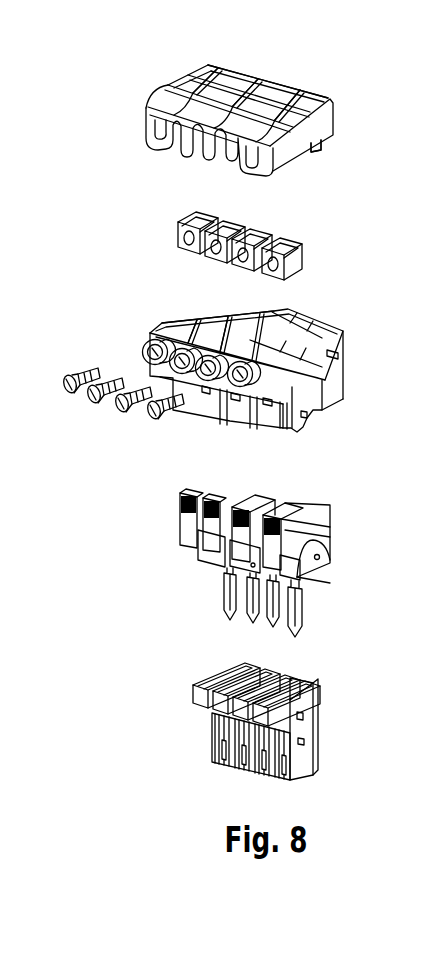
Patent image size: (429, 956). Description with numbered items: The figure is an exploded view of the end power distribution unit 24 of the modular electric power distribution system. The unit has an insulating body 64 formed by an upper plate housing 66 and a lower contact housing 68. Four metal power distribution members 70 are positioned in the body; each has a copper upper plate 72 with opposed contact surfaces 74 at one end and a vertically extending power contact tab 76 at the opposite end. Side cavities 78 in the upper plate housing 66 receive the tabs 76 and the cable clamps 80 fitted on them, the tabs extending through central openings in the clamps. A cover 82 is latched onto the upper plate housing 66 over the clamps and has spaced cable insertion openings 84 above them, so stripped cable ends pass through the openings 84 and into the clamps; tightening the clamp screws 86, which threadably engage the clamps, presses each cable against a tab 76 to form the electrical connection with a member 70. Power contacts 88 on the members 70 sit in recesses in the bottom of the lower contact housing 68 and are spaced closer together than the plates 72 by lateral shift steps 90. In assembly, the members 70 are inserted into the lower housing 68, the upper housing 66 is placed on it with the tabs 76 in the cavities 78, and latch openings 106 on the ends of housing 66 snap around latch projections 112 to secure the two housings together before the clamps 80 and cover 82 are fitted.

The end power distribution unit 24 is at (352, 96).
The insulating body 64 is at (163, 85).
The upper plate housing 66 is at (345, 333).
The lower contact housing 68 is at (316, 709).
The power distribution member 70 is at (293, 494).
The upper plate 72 is at (250, 500).
The contact surfaces 74 is at (304, 516).
The power contact tab 76 is at (210, 498).
The side cavities 78 is at (217, 337).
The cable clamps 80 is at (268, 224).
The cover 82 is at (331, 110).
The cable insertion openings 84 is at (220, 64).
The clamp screws 86 is at (100, 396).
The power contacts 88 is at (255, 622).
The lateral shift steps 90 is at (320, 542).
The latch openings 106 is at (308, 418).
The latch projections 112 is at (306, 720).